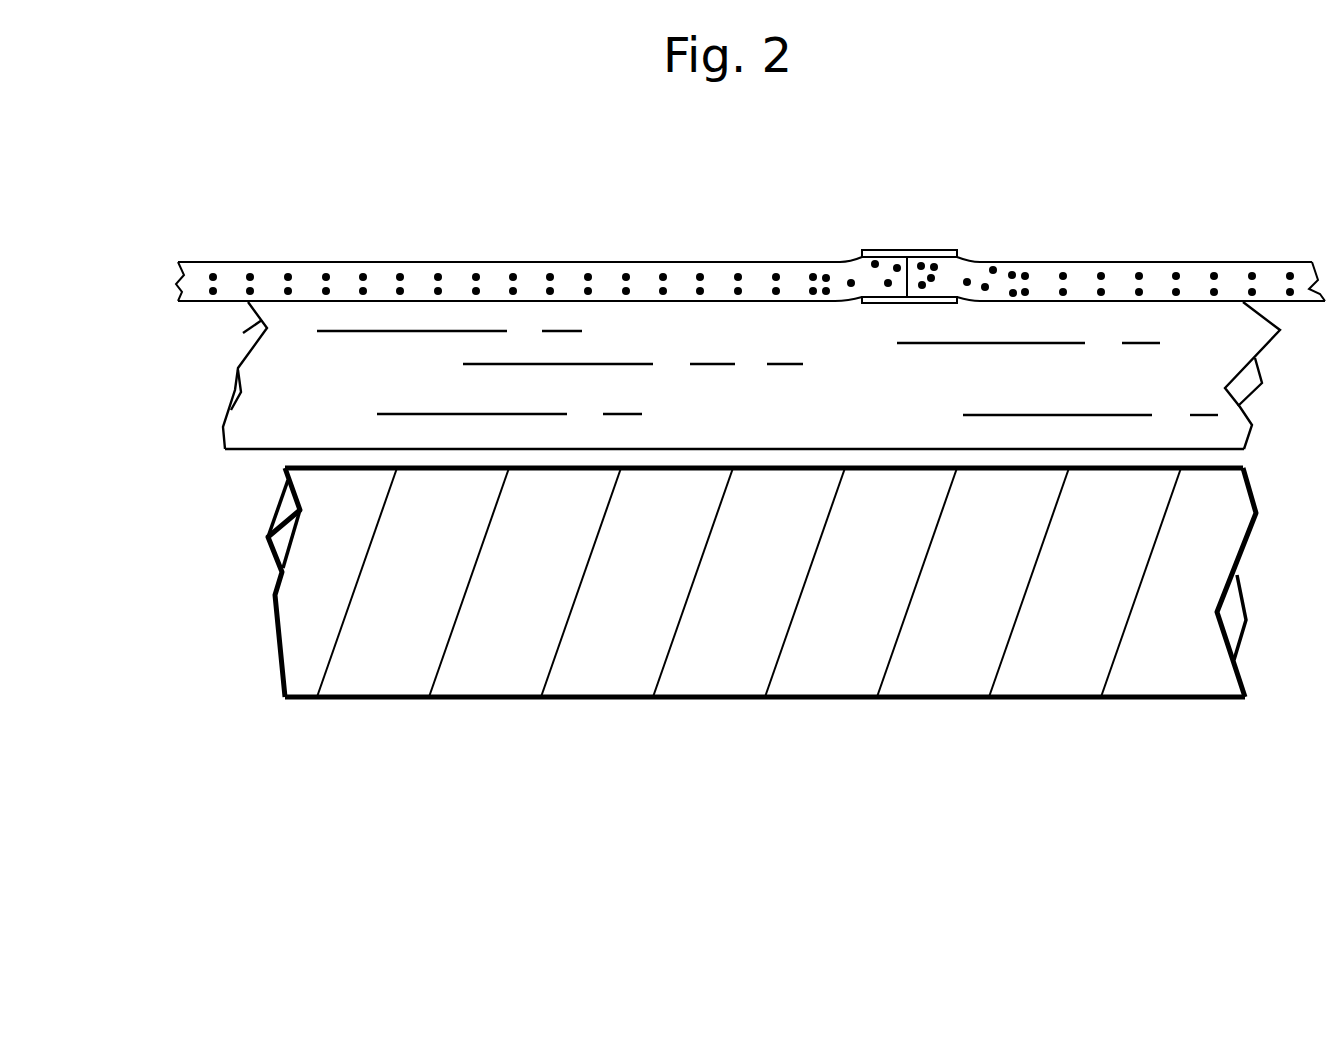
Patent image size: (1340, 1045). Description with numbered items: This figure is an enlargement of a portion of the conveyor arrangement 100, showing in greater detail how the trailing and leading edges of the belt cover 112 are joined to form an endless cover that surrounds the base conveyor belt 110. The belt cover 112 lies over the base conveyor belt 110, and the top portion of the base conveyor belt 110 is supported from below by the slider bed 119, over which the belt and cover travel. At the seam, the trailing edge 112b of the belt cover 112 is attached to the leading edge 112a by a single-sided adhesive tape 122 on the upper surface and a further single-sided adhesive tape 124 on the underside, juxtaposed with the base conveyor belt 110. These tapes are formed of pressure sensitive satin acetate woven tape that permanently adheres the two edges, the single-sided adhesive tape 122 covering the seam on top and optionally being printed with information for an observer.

The conveyor arrangement 100 is at (1158, 819).
The base conveyor belt 110 is at (281, 427).
The belt cover 112 is at (319, 269).
The leading edge 112a is at (968, 272).
The trailing edge 112b is at (848, 268).
The slider bed 119 is at (462, 683).
The single-sided adhesive tape 122 is at (891, 256).
The further single-sided adhesive tape 124 is at (895, 303).